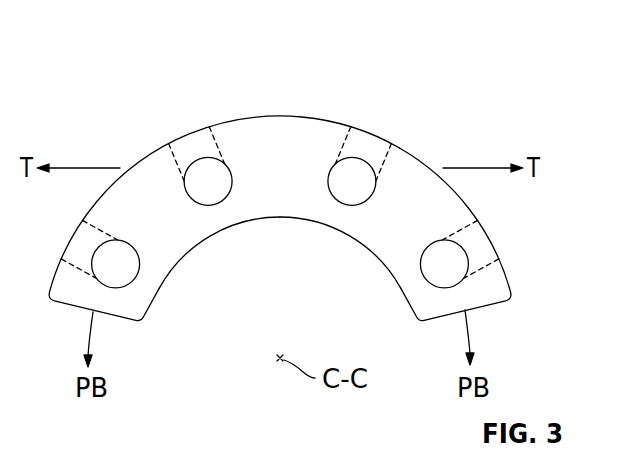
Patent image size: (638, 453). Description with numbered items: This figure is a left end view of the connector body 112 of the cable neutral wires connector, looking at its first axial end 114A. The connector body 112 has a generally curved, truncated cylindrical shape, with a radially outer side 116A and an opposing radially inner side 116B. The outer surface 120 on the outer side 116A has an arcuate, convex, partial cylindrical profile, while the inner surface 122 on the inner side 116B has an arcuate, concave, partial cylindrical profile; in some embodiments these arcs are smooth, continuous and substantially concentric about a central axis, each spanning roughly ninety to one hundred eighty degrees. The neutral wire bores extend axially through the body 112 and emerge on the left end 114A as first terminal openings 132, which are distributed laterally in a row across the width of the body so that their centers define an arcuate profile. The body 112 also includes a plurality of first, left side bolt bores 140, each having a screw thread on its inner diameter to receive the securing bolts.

The connector body 112 is at (148, 122).
The first axial end 114A is at (312, 215).
The radially outer side 116A is at (275, 106).
The radially inner side 116B is at (355, 255).
The outer surface 120 is at (418, 160).
The inner surface 122 is at (398, 290).
The first terminal opening 132 is at (210, 205).
The first bolt bore 140 is at (191, 143).